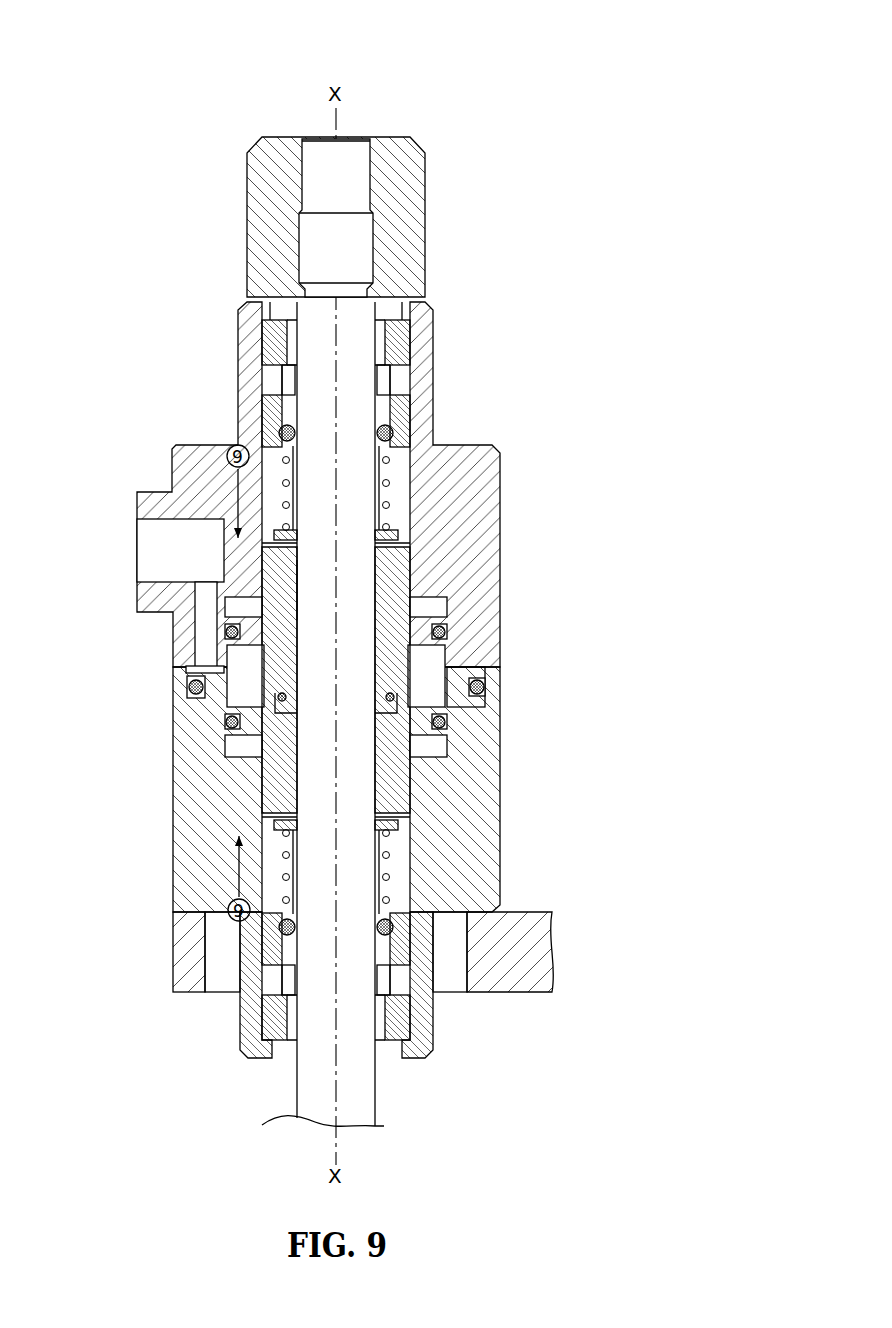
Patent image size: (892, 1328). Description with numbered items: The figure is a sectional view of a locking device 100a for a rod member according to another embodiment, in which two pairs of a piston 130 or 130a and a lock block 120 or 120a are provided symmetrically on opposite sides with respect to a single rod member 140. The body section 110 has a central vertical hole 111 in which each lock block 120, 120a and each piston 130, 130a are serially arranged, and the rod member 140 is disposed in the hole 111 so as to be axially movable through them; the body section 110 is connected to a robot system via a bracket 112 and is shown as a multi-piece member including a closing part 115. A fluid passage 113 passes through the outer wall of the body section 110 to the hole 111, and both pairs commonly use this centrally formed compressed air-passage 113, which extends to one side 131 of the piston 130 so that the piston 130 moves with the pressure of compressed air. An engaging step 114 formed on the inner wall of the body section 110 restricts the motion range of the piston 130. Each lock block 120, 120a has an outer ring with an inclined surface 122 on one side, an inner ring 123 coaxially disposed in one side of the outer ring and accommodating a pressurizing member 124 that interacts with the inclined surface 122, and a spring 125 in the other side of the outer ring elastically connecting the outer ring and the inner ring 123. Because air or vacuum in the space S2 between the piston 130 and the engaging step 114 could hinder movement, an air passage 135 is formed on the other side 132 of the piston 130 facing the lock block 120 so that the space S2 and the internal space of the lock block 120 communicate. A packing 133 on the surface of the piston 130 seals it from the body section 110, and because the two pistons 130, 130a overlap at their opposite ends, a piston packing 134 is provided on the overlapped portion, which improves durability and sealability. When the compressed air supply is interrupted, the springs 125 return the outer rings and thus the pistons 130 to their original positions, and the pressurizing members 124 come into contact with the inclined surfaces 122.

The locking device 100a is at (492, 104).
The body section 110 is at (515, 631).
The vertical hole 111 is at (298, 612).
The bracket 112 is at (530, 968).
The fluid passage 113 is at (163, 572).
The engaging step 114 is at (217, 605).
The closing part 115 is at (405, 346).
The lock block 120 is at (425, 861).
The lock block 120a is at (420, 476).
The inclined surface 122 is at (398, 452).
The inner ring 123 is at (282, 985).
The pressurizing member 124 is at (290, 935).
The spring 125 is at (290, 878).
The piston 130 is at (422, 790).
The piston 130a is at (416, 567).
The one side of piston 131 is at (203, 690).
The other side of piston 132 is at (262, 565).
The packing 133 is at (448, 725).
The piston packing 134 is at (485, 688).
The air passage 135 is at (292, 820).
The rod member 140 is at (385, 1082).
The space S2 is at (448, 605).